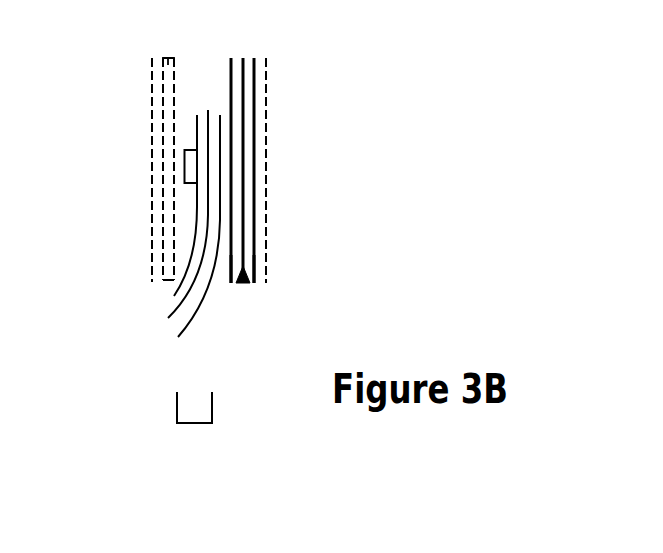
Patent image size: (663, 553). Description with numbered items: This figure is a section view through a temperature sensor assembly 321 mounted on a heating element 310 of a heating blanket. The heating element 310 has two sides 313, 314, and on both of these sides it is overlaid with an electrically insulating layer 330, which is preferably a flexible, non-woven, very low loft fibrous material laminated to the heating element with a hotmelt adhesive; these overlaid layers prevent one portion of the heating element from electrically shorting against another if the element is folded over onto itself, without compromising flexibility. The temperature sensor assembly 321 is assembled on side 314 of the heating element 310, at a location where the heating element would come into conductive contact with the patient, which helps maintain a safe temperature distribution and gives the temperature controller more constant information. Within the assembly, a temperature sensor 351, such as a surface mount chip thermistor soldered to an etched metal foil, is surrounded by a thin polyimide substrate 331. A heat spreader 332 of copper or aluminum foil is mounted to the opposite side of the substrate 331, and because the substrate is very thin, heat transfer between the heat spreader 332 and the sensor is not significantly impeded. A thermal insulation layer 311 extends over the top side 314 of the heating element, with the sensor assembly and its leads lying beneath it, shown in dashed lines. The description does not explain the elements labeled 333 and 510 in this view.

The heating element 310 is at (243, 285).
The thermal insulation layer 311 is at (167, 56).
The side 313 is at (254, 284).
The side 314 is at (236, 284).
The temperature sensor assembly 321 is at (191, 423).
The electrically insulating layer 330 is at (230, 58).
The substrate 331 is at (176, 293).
The heat spreader 332 is at (168, 318).
The third guide vane 333 is at (178, 337).
The temperature sensor 351 is at (189, 150).
The housing boundary 510 is at (150, 264).